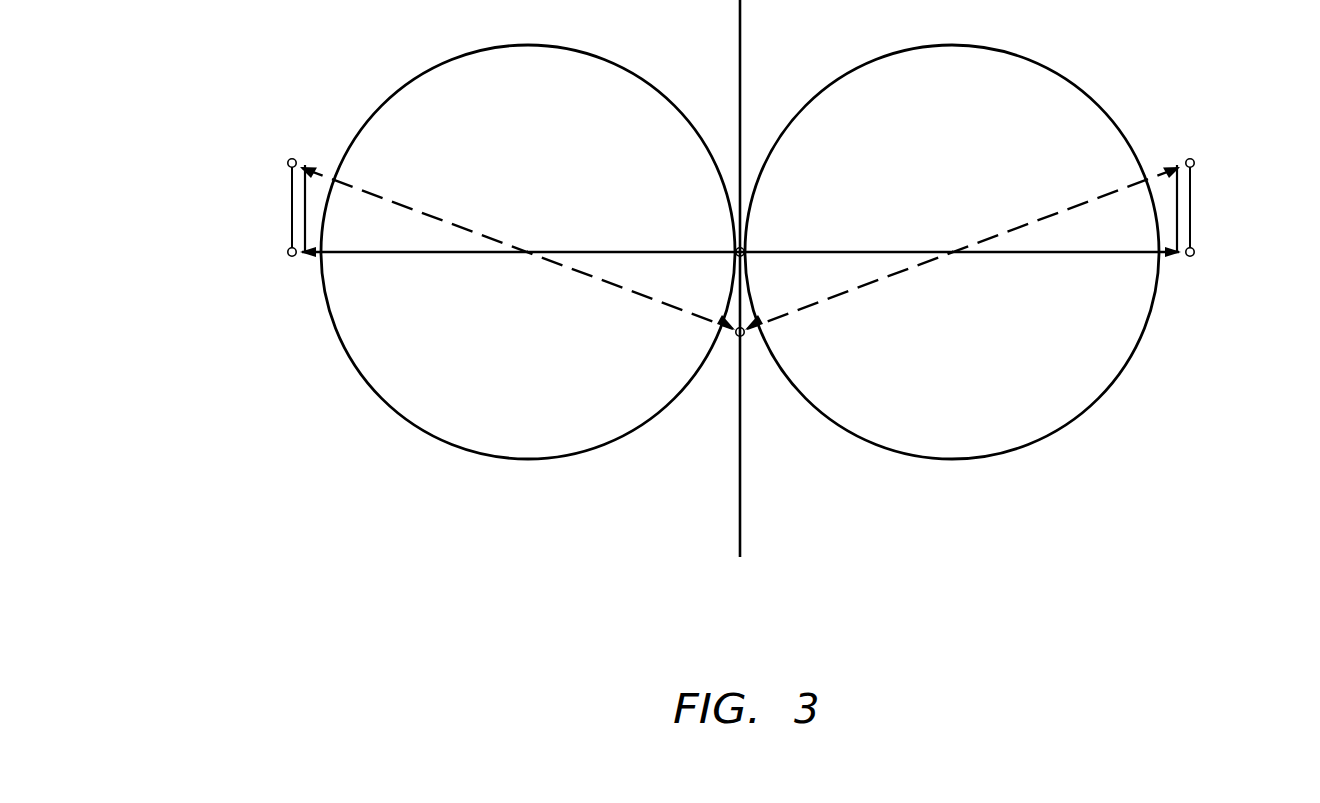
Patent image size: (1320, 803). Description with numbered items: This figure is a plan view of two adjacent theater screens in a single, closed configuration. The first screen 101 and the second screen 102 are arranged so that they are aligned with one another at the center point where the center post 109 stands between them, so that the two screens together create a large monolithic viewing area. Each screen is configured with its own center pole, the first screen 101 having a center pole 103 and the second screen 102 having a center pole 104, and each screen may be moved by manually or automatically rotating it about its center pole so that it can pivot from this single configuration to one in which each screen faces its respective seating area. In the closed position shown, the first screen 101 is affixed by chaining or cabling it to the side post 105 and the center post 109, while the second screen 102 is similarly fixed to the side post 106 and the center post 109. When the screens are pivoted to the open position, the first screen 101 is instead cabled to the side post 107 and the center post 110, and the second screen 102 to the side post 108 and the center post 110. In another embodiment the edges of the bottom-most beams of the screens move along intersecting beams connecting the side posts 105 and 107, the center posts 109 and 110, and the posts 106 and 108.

The first screen 101 is at (363, 253).
The second screen 102 is at (1122, 253).
The center pole 103 is at (528, 250).
The center pole 104 is at (955, 251).
The side post 105 is at (288, 251).
The side post 106 is at (1194, 251).
The side post 107 is at (288, 162).
The side post 108 is at (1194, 162).
The center post 109 is at (741, 243).
The center post 110 is at (743, 338).